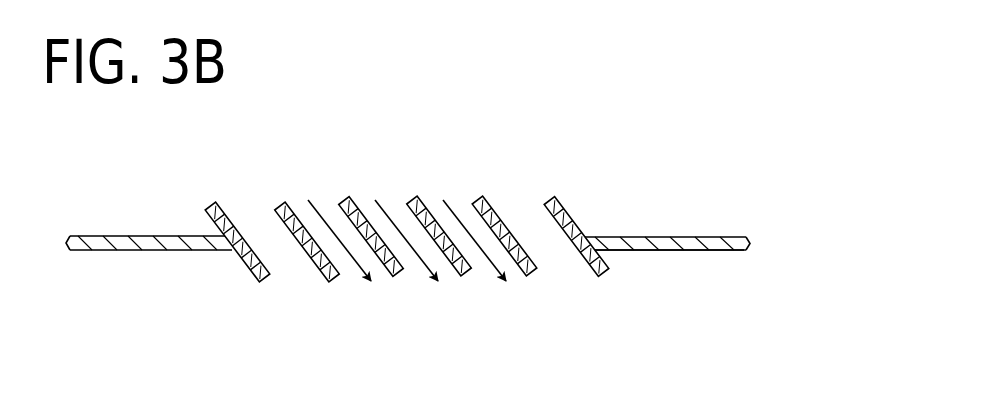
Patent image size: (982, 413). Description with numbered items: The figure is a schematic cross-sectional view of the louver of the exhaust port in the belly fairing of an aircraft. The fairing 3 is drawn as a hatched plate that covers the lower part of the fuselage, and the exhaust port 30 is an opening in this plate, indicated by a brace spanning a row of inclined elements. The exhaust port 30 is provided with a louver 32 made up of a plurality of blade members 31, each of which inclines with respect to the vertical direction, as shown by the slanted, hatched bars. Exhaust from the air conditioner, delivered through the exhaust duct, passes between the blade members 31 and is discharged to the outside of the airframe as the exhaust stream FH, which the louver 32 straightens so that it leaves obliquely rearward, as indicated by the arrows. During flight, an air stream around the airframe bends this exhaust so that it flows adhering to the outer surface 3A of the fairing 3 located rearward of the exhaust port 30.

The belly fairing 3 is at (716, 236).
The surface 3A is at (687, 252).
The exhaust port 30 is at (407, 230).
The blade members 31 is at (234, 212).
The louver 32 is at (575, 192).